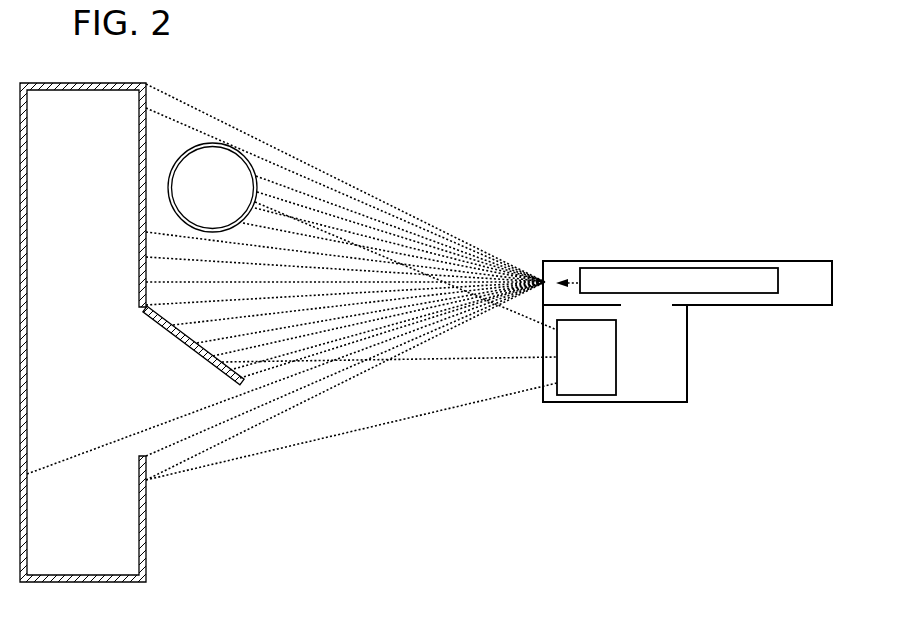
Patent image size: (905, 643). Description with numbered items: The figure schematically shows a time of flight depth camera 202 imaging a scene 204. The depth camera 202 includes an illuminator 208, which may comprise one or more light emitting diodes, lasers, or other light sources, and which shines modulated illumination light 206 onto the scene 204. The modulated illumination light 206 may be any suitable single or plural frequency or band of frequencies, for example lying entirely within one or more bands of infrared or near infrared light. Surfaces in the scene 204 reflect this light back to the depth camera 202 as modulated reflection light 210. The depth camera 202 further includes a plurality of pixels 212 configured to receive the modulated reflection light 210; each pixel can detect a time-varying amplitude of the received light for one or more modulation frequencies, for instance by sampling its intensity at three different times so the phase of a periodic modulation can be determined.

The depth camera 202 is at (665, 323).
The scene 204 is at (339, 120).
The modulated illumination light 206 is at (443, 226).
The illuminator 208 is at (678, 265).
The modulated reflection light 210 is at (389, 426).
The plurality of pixels 212 is at (602, 368).